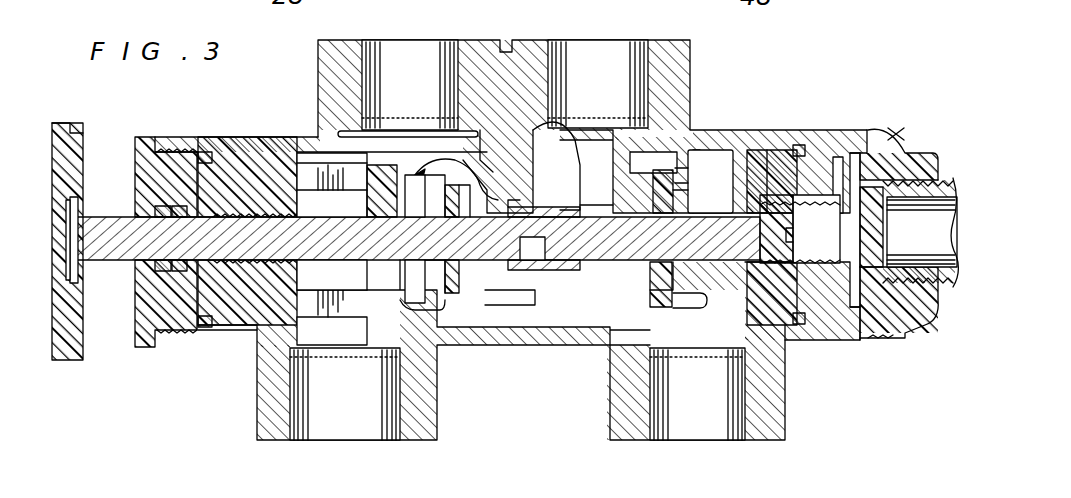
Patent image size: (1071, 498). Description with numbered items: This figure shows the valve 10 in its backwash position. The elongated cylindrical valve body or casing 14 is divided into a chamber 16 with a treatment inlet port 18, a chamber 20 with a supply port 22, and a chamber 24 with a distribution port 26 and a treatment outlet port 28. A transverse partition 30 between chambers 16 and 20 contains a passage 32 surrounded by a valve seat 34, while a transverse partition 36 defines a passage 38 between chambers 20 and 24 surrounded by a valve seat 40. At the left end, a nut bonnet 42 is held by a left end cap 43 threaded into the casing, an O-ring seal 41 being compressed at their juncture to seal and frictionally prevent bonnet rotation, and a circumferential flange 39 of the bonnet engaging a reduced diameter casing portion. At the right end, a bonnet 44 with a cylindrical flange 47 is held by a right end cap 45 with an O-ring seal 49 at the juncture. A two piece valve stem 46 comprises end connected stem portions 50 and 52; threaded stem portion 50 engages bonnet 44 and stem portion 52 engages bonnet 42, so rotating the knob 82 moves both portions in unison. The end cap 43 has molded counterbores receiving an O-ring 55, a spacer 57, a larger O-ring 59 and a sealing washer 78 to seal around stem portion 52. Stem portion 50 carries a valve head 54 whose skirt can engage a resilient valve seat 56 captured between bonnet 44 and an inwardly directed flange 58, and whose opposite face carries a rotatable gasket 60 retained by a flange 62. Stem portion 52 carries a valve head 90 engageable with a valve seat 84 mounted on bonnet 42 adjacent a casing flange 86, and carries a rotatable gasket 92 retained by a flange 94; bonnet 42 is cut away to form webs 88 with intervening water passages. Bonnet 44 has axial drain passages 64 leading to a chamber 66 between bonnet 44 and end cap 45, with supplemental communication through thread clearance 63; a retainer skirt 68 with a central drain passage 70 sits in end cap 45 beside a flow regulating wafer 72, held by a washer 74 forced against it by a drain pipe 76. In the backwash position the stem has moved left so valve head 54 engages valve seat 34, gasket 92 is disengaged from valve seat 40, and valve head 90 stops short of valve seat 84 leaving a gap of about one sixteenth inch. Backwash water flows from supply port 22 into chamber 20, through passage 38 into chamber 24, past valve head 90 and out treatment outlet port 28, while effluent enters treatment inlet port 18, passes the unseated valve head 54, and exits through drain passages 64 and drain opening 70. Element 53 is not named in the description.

The valve 10 is at (273, 132).
The valve body or casing 14 is at (250, 137).
The chamber 16 is at (722, 200).
The treatment inlet port 18 is at (738, 440).
The chamber 20 is at (590, 0).
The supply port 22 is at (640, 55).
The chamber 24 is at (490, 163).
The distribution port 26 is at (365, 62).
The treatment outlet port 28 is at (296, 440).
The transverse partition or wall 30 is at (606, 335).
The passage 32 is at (630, 188).
The valve seat 34 is at (655, 298).
The transverse partition 36 is at (535, 307).
The passage 38 is at (528, 194).
The circumferential flange 39 is at (228, 330).
The valve seat 40 is at (452, 300).
The O-ring seal 41 is at (204, 150).
The nut bonnet 42 is at (278, 150).
The left end cap 43 is at (148, 137).
The nut or bonnet 44 is at (832, 160).
The right end cap 45 is at (897, 133).
The valve rod or stem 46 is at (341, 262).
The cylindrical flange 47 is at (793, 147).
The O-ring seal 49 is at (920, 224).
The valve stem portion 50 is at (725, 251).
The valve stem portion 52 is at (103, 262).
The piston 53 is at (550, 265).
The valve head 54 is at (662, 210).
The O-ring 55 is at (162, 275).
The valve seat 56 is at (758, 167).
The washer or spacer 57 is at (172, 273).
The inwardly directed flange 58 is at (735, 185).
The O-ring 59 is at (170, 340).
The rotatable gasket 60 is at (660, 205).
The outwardly directed flange 62 is at (648, 275).
The thread clearance 63 is at (787, 262).
The drain passages 64 is at (806, 262).
The chamber 66 is at (857, 187).
The retainer skirt 68 is at (890, 133).
The drain passage 70 is at (860, 228).
The flow regulating wafer 72 is at (911, 246).
The washer 74 is at (895, 255).
The drain pipe 76 is at (947, 300).
The sealing washer 78 is at (175, 190).
The knob 82 is at (64, 125).
The valve seat 84 is at (392, 165).
The circumferential flange 86 is at (395, 205).
The integral webs 88 is at (316, 192).
The valve head 90 is at (438, 340).
The rotatable gasket 92 is at (468, 300).
The outwardly directed flange 94 is at (478, 205).